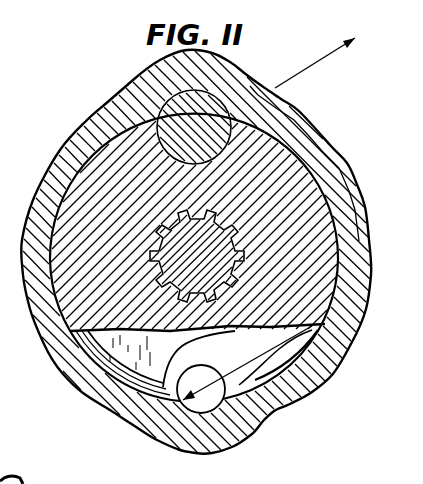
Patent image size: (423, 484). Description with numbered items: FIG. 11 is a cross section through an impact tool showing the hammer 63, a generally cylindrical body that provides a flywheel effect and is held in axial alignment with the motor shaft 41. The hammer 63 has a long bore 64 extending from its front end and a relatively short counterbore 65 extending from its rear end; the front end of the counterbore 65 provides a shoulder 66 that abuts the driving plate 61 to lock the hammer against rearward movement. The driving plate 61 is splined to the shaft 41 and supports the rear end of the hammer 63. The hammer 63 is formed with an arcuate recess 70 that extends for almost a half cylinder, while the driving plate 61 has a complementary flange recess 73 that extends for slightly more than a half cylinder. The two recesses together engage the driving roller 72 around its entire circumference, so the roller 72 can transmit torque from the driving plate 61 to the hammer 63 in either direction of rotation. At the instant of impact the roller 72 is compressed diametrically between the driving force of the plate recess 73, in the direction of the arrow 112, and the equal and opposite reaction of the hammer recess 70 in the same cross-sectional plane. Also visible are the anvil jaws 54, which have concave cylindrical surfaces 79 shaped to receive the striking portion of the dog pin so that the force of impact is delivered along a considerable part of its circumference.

The motor shaft 41 is at (199, 242).
The jaws 54 is at (132, 370).
The driving plate 61 is at (90, 157).
The hammer 63 is at (113, 101).
The bore 64 is at (100, 340).
The counterbore 65 is at (100, 360).
The shoulder 66 is at (306, 388).
The arcuate recess 70 is at (191, 90).
The driving roller 72 is at (256, 80).
The arcuate recess 73 is at (232, 117).
The concave cylindrical surfaces 79 is at (171, 353).
The arrow 112 is at (312, 64).